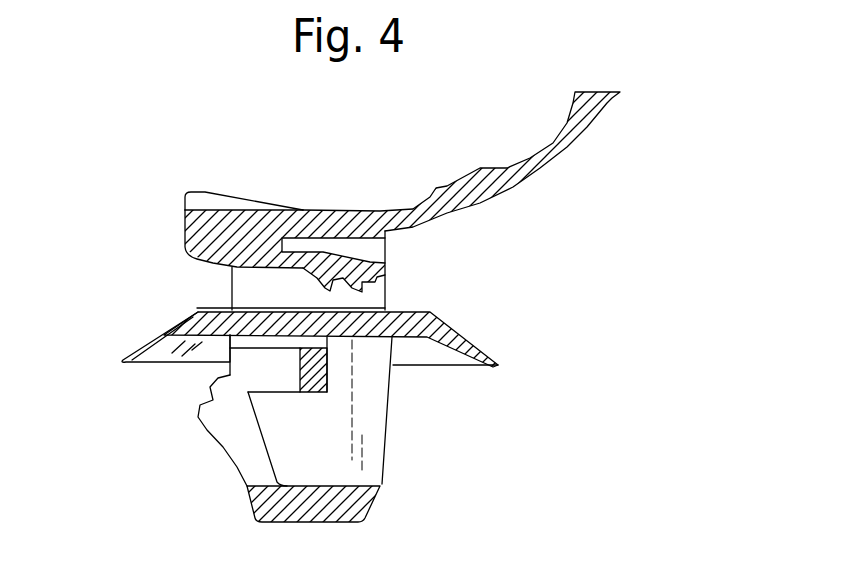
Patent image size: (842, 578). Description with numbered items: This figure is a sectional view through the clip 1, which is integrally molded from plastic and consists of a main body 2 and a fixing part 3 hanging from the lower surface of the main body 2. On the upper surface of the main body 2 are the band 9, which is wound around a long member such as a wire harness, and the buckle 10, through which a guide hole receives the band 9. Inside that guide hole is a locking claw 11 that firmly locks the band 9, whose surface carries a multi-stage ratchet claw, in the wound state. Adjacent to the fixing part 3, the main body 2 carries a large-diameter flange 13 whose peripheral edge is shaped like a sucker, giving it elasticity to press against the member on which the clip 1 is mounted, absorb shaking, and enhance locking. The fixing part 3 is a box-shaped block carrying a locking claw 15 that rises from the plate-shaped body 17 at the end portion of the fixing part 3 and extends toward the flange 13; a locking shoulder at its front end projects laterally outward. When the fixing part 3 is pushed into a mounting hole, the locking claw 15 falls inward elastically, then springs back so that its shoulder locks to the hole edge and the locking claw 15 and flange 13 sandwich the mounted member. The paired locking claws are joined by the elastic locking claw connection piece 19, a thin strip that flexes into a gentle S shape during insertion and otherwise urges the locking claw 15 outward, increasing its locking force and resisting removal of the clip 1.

The clip 1 is at (647, 209).
The main body 2 is at (396, 283).
The fixing part 3 is at (397, 407).
The band 9 is at (462, 190).
The buckle 10 is at (213, 197).
The locking claw 11 is at (383, 262).
The flange 13 is at (157, 336).
The locking claw 15 is at (232, 425).
The plate-shaped body 17 is at (355, 505).
The locking claw connection piece 19 is at (282, 366).